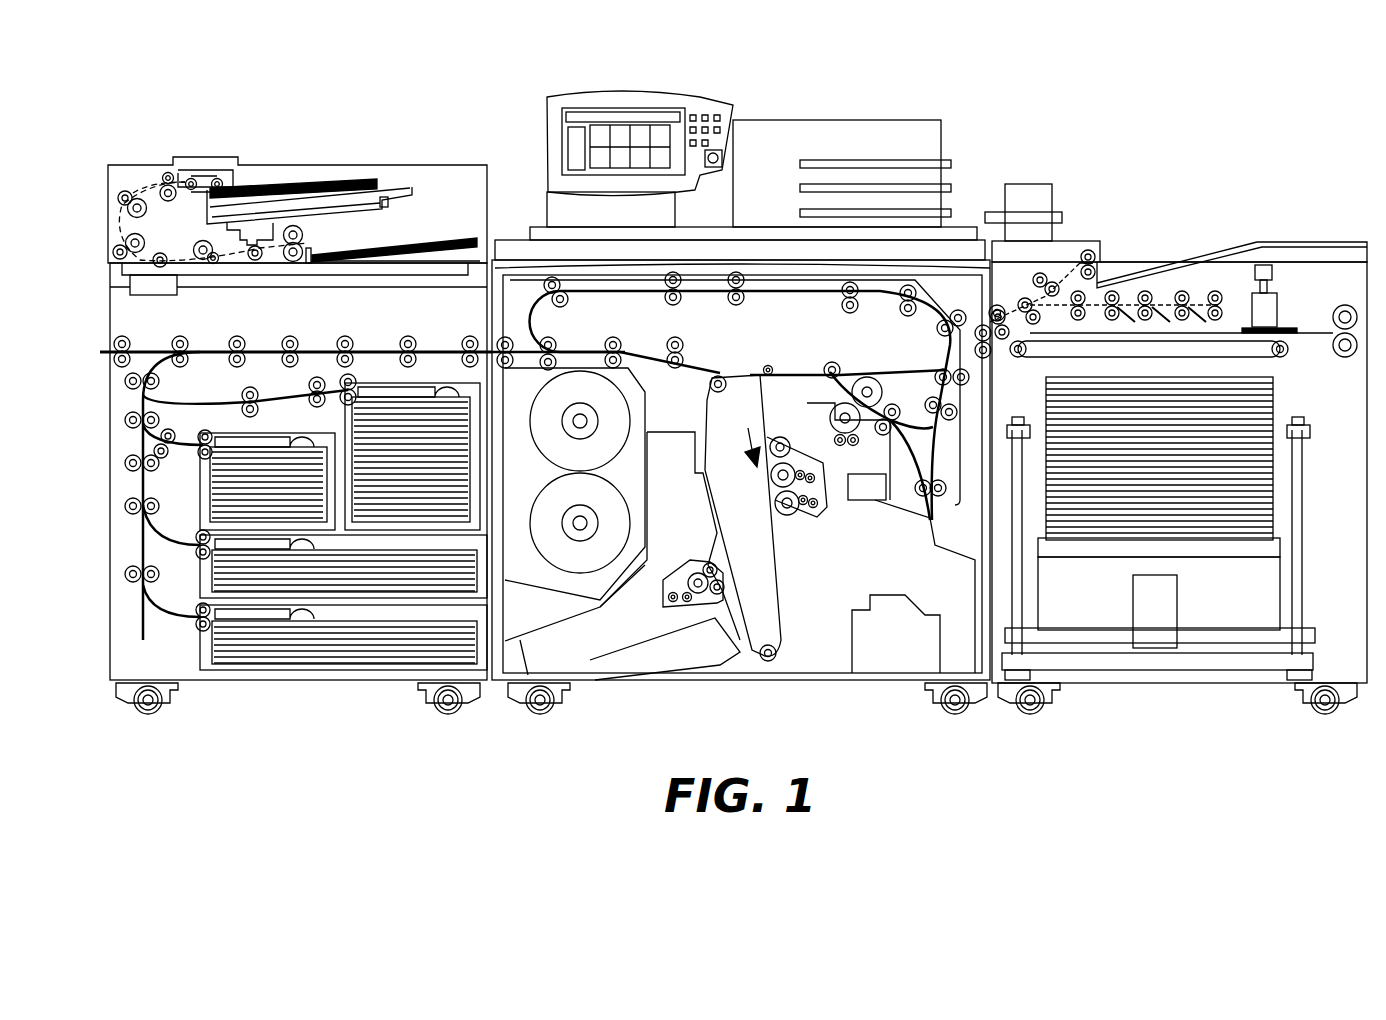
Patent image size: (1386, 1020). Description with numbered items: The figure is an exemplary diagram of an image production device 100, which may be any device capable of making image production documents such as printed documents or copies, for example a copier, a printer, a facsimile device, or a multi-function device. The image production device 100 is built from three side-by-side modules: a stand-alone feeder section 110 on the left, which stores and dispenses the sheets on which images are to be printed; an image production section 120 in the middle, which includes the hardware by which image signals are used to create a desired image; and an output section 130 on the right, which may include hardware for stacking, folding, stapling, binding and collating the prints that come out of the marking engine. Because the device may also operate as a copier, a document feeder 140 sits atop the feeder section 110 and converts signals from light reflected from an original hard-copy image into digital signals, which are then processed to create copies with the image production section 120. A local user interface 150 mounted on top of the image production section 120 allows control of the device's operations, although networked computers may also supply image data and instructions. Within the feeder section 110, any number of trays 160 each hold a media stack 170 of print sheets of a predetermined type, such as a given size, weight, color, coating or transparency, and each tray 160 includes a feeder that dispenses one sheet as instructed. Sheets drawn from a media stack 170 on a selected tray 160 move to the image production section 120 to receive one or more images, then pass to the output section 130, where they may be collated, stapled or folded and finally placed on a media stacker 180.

The image production device 100 is at (1052, 102).
The feeder section 110 is at (304, 683).
The image production section 120 is at (765, 683).
The output section 130 is at (1152, 683).
The document feeder 140 is at (333, 164).
The local user interface 150 is at (813, 120).
The tray 160 is at (200, 650).
The media stack 170 is at (736, 523).
The media stacker 180 is at (1210, 557).